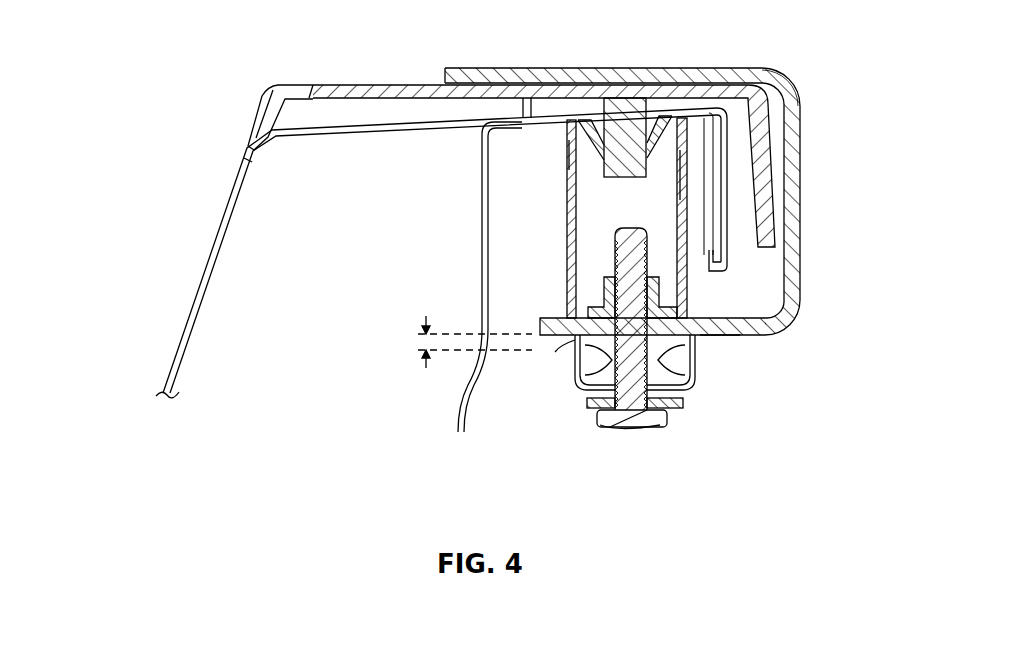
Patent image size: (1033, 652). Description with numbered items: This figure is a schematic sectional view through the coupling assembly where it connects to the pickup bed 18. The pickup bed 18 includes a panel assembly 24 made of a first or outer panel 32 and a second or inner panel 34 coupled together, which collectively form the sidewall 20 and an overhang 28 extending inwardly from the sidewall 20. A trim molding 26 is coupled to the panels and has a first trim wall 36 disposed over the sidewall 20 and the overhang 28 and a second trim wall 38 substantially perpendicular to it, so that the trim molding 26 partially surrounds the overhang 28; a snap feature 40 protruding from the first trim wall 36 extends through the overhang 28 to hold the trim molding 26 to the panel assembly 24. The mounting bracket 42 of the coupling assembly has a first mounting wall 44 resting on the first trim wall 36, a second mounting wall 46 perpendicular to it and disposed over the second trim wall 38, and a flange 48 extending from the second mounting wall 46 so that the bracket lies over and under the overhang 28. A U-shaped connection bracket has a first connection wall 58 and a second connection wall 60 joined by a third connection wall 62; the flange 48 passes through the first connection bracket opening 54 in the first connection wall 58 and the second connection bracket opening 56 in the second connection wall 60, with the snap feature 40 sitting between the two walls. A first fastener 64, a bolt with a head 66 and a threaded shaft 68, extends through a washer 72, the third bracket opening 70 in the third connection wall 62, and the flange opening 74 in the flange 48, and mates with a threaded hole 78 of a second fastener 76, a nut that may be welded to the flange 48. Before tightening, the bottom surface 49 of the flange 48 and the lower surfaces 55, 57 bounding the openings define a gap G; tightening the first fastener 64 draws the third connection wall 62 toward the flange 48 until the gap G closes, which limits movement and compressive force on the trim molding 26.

The pickup bed 18 is at (198, 275).
The sidewall 20 is at (172, 368).
The panel assembly 24 is at (172, 320).
The trim molding 26 is at (336, 86).
The overhang 28 is at (712, 108).
The first panel 32 is at (233, 182).
The second panel 34 is at (478, 232).
The first trim wall 36 is at (420, 85).
The second trim wall 38 is at (762, 130).
The snap feature 40 is at (603, 102).
The mounting bracket 42 is at (730, 67).
The first mounting wall 44 is at (490, 68).
The second mounting wall 46 is at (806, 231).
The flange 48 is at (753, 327).
The bottom surface 49 is at (730, 337).
The first connection bracket opening 54 is at (678, 210).
The lower surface 55 is at (690, 343).
The second connection bracket opening 56 is at (567, 203).
The lower surface 57 is at (573, 343).
The first connection wall 58 is at (678, 190).
The second connection wall 60 is at (567, 157).
The third connection wall 62 is at (585, 400).
The first fastener 64 is at (597, 370).
The head 66 is at (658, 428).
The threaded shaft 68 is at (617, 265).
The third bracket opening 70 is at (627, 423).
The washer 72 is at (683, 405).
The flange opening 74 is at (587, 320).
The second fastener 76 is at (660, 300).
The threaded hole 78 is at (714, 270).
The gap G is at (420, 343).